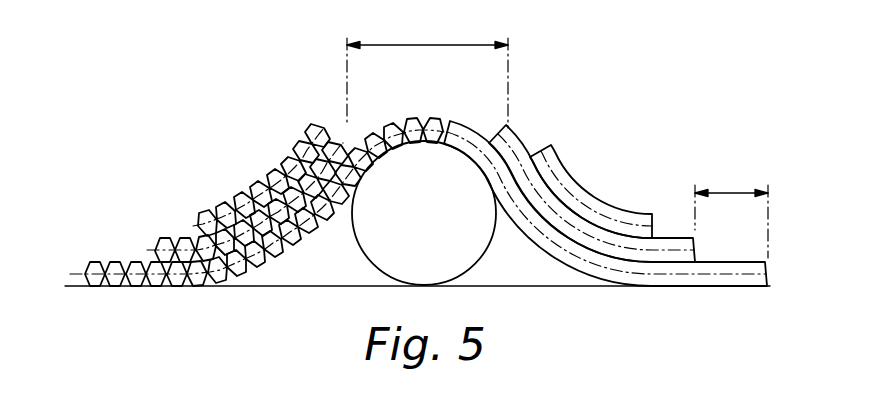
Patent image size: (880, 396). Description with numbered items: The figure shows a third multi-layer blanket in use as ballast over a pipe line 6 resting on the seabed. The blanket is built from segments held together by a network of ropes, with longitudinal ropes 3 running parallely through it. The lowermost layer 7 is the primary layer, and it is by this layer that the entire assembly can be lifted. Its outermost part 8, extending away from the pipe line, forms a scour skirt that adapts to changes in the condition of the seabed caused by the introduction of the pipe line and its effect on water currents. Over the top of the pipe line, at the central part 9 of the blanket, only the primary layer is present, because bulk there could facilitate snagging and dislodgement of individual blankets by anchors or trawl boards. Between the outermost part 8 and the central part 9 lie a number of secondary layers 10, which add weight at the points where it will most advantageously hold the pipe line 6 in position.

The longitudinal ropes 3 is at (77, 272).
The secondary layers 10 is at (163, 237).
The pipe line 6 is at (489, 245).
The lowermost layer 7 is at (686, 278).
The outermost part 8 is at (728, 193).
The central part 9 is at (463, 46).